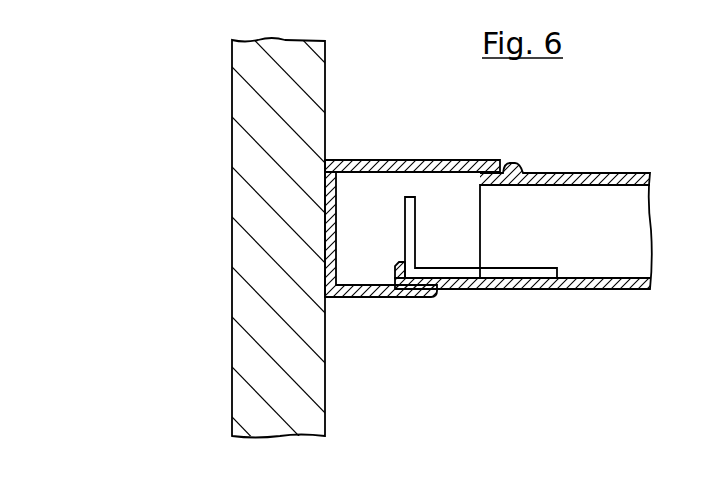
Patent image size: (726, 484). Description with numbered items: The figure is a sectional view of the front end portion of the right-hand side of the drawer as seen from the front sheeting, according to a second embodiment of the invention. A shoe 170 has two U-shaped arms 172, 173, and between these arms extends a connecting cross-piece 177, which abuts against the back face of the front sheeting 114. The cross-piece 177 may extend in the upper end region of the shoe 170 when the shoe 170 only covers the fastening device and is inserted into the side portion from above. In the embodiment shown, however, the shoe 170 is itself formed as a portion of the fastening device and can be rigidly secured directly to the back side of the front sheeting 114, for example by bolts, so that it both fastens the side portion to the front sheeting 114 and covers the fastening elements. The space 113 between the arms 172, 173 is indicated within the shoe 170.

The front sheeting 114 is at (240, 134).
The connecting cross-piece 177 is at (328, 247).
The shoe 170 is at (430, 159).
The cavity 113 is at (371, 201).
The U-shaped arm 173 is at (467, 162).
The U-shaped arm 172 is at (412, 293).